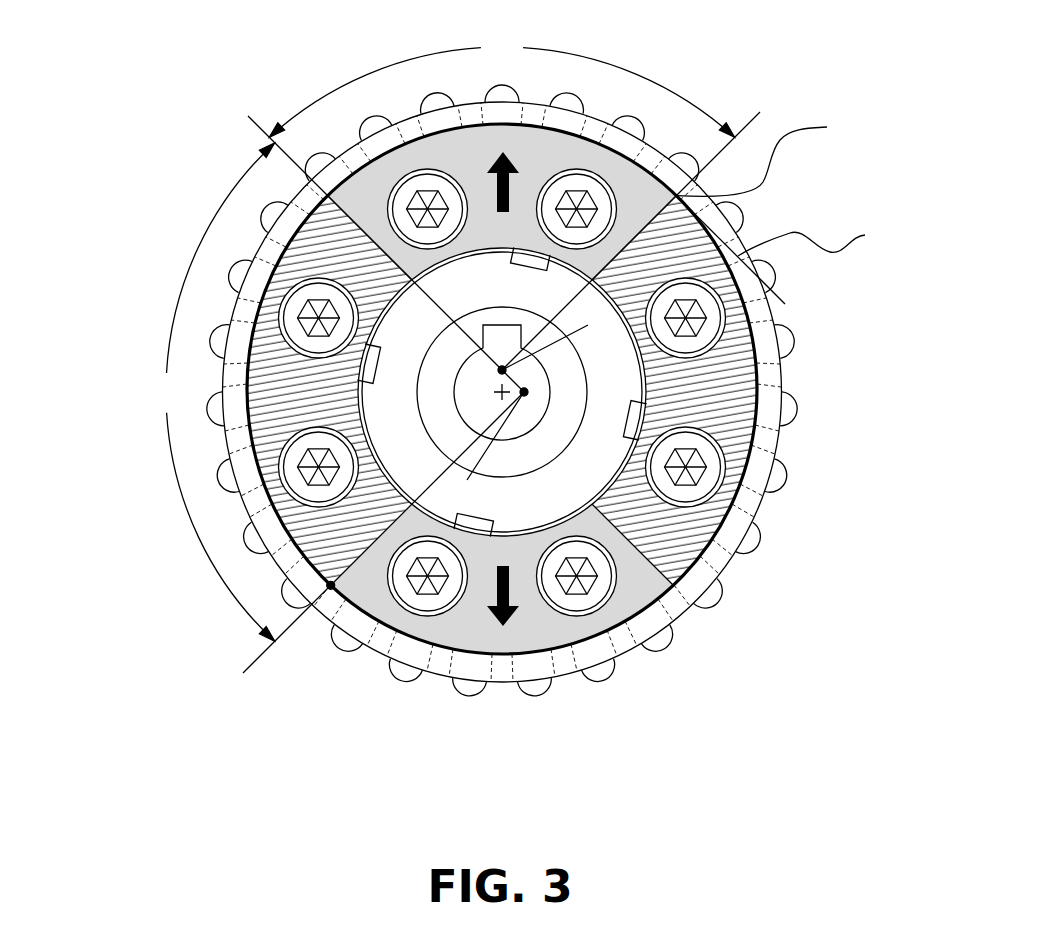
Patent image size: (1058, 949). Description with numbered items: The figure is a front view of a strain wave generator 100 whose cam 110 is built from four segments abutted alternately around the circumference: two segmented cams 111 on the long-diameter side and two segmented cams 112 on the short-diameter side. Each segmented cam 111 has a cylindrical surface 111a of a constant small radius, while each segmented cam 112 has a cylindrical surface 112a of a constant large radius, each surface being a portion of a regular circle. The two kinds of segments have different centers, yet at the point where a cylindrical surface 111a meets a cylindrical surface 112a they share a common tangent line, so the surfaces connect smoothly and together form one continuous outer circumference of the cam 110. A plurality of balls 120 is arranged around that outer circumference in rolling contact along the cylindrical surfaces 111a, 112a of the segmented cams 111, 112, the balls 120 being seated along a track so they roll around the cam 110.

The strain wave generator 100 is at (143, 82).
The cam 110 is at (751, 319).
The segmented cam on a long-diameter side 111 is at (558, 150).
The cylindrical surface of small radius 111a is at (375, 168).
The segmented cam on a short-diameter side 112 is at (737, 383).
The cylindrical surface of large radius 112a is at (250, 346).
The balls 120 is at (778, 478).